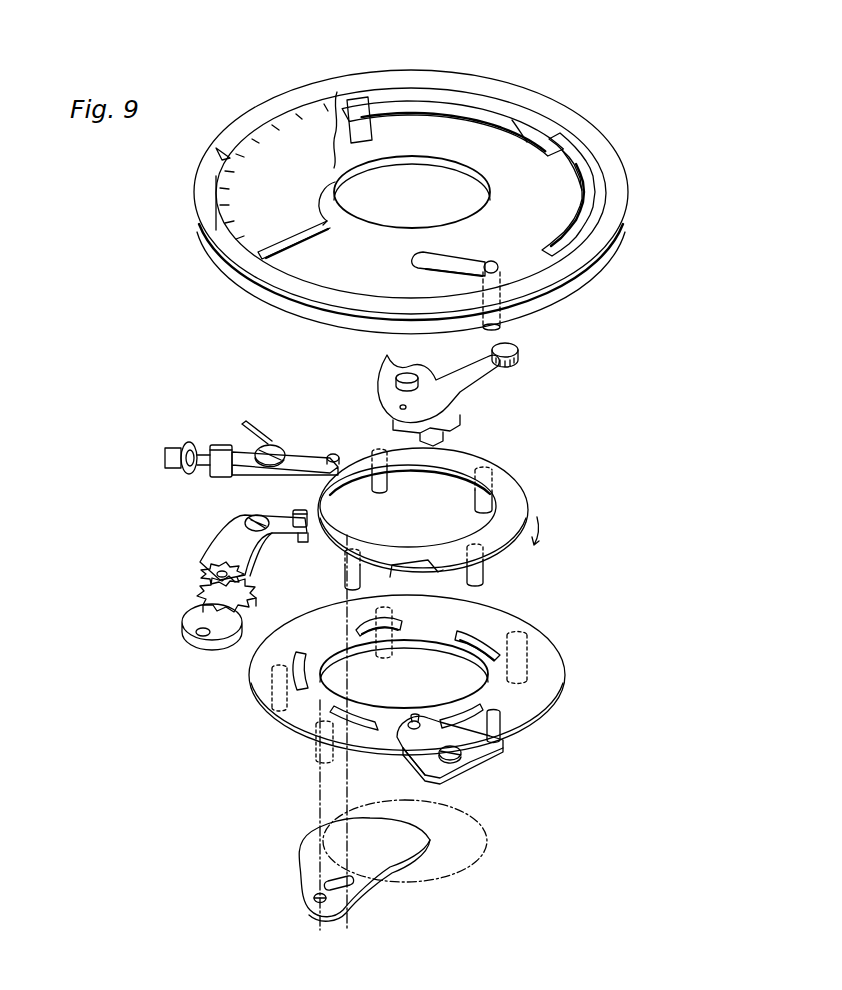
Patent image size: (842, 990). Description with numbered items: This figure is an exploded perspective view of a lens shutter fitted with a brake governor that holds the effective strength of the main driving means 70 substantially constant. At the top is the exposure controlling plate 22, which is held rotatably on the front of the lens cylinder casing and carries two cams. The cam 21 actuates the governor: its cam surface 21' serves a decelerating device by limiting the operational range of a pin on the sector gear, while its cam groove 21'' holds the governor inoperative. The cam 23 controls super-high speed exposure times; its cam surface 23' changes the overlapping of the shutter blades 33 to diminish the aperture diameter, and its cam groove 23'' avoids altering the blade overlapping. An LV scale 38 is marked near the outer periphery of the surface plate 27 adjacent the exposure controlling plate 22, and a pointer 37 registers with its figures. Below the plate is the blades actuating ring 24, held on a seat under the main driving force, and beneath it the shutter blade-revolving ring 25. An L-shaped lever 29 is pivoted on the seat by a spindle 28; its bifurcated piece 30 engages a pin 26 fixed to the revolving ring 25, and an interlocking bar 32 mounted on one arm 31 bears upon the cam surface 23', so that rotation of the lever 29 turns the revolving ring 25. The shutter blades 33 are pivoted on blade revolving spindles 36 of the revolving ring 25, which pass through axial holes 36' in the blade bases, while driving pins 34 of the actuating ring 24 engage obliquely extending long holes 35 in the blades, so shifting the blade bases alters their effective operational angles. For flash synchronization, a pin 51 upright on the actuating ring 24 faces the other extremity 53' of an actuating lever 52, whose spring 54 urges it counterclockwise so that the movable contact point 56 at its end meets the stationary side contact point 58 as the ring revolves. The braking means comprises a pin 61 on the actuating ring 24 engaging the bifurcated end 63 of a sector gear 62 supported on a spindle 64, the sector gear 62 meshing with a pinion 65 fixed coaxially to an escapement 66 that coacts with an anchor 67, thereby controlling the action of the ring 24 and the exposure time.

The cam 21 is at (452, 97).
The cam surface 21' is at (376, 89).
The cam groove 21'' is at (532, 93).
The exposure controlling plate 22 is at (604, 153).
The cam 23 is at (587, 213).
The cam surface 23' is at (502, 294).
The cam groove 23'' is at (614, 190).
The blades actuating ring 24 is at (503, 478).
The shutter blade-revolving ring 25 is at (506, 618).
The pin 26 is at (417, 716).
The surface plate 27 is at (273, 253).
The spindle 28 is at (460, 757).
The L-shaped lever 29 is at (432, 750).
The bifurcated piece 30 is at (406, 723).
The arm 31 is at (484, 746).
The interlocking bar 32 is at (500, 327).
The shutter blades 33 is at (307, 843).
The driving pins 34 is at (343, 582).
The long holes 35 is at (350, 885).
The blade revolving spindles 36 is at (302, 752).
The axial holes 36' is at (298, 897).
The pointer 37 is at (223, 150).
The LV scale 38 is at (218, 224).
The pin 51 is at (332, 453).
The actuating lever 52 is at (250, 446).
The other extremity 53' is at (285, 477).
The spring 54 is at (276, 438).
The contact point 56 is at (220, 444).
The stationary side contact point 58 is at (195, 446).
The pin 61 is at (310, 520).
The sector gear 62 is at (218, 547).
The bifurcated end 63 is at (297, 540).
The spindle 64 is at (248, 527).
The pinion 65 is at (203, 582).
The escapement 66 is at (198, 599).
The anchor 67 is at (192, 630).
The main driving means 70 is at (382, 392).